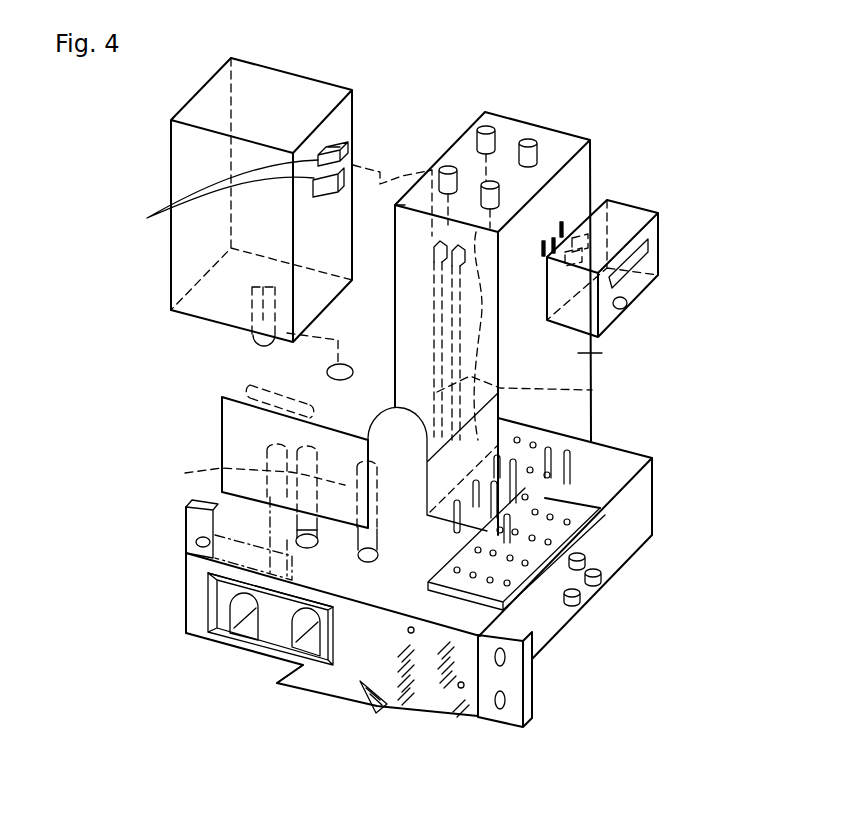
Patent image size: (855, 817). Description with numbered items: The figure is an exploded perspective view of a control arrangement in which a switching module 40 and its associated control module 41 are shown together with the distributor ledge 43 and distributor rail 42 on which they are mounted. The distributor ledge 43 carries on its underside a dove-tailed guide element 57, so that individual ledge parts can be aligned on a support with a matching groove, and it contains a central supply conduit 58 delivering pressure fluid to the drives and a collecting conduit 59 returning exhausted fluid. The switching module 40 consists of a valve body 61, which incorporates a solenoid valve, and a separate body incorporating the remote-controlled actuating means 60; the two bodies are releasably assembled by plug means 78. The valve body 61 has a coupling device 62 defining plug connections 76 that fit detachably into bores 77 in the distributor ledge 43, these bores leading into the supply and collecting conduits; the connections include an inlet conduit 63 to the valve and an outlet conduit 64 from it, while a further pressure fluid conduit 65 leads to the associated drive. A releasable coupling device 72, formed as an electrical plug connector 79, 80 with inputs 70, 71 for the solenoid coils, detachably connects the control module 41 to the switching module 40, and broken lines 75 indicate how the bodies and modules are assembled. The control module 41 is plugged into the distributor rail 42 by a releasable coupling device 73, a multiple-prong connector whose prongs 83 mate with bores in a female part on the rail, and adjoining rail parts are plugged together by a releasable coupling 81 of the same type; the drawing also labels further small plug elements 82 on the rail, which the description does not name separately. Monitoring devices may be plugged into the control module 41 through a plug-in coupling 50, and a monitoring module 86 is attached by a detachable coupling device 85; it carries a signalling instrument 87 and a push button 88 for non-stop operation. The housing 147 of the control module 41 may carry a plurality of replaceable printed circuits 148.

The switching module 40 is at (148, 165).
The control module 41 is at (552, 120).
The distributor rail 42 is at (492, 620).
The distributor ledge 43 is at (196, 625).
The plug-in coupling 50 is at (508, 163).
The dove-tailed guide element 57 is at (307, 680).
The central supply conduit 58 is at (303, 641).
The collecting conduit 59 is at (240, 628).
The remote-controlled actuating means 60 is at (257, 90).
The valve body 61 is at (243, 441).
The coupling device 62 is at (312, 568).
The inlet conduit 63 is at (250, 392).
The outlet conduit 64 is at (250, 473).
The pressure fluid conduit 65 is at (222, 398).
The input 70 is at (333, 148).
The input 71 is at (147, 218).
The releasable coupling device 72 is at (410, 100).
The releasable coupling device 73 is at (603, 468).
The broken lines 75 is at (383, 174).
The plug connections 76 is at (222, 498).
The bores 77 is at (190, 555).
The plug means 78 is at (250, 337).
The electrical plug connector 79 is at (336, 181).
The electrical plug connector 80 is at (441, 192).
The releasable coupling 81 is at (430, 690).
The pins 82 is at (400, 645).
The prongs 83 is at (598, 508).
The detachable coupling device 85 is at (580, 222).
The monitoring module 86 is at (636, 215).
The signalling instrument 87 is at (648, 250).
The push button 88 is at (628, 306).
The housing 147 is at (613, 355).
The replaceable printed circuits 148 is at (538, 392).